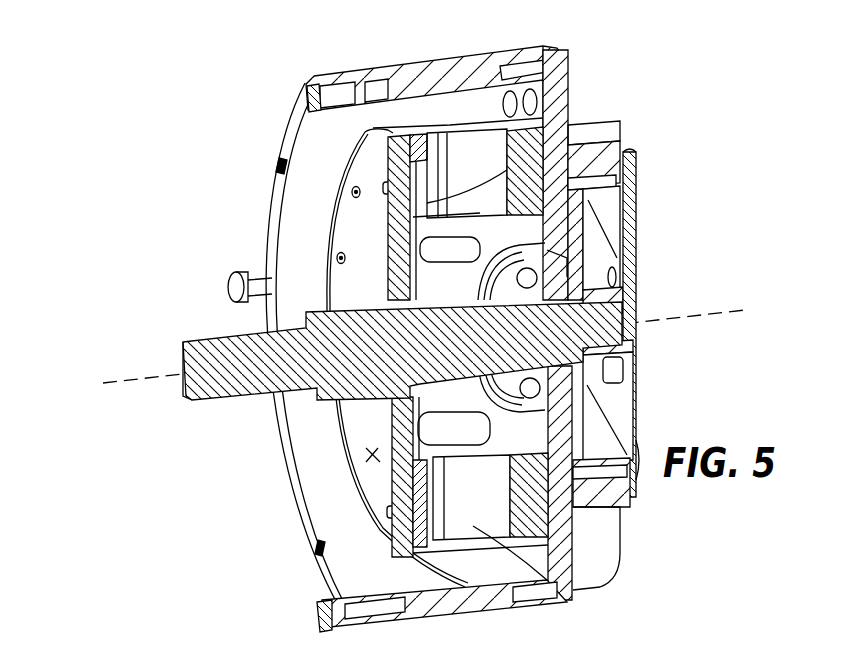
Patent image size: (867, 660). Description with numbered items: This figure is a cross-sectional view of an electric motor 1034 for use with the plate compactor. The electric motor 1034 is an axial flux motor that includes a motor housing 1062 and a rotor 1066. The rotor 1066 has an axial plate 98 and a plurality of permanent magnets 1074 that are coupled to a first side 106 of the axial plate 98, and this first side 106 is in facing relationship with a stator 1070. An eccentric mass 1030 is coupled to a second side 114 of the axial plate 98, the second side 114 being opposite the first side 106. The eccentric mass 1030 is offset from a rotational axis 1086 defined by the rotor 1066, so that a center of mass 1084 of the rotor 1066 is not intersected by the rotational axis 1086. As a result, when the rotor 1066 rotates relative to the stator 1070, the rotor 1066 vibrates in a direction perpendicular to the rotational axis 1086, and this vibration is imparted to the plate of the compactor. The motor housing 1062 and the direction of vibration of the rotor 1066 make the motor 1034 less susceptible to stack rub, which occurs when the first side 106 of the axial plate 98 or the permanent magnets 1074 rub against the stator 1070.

The electric motor 1034 is at (376, 66).
The second side 114 is at (302, 72).
The permanent magnets 1074 is at (414, 157).
The motor housing 1062 is at (520, 62).
The first side 106 is at (576, 122).
The rotor 1066 is at (302, 358).
The axial plate 98 is at (363, 167).
The rotational axis 1086 is at (126, 380).
The center of mass 1084 is at (373, 453).
The eccentric mass 1030 is at (382, 523).
The stator 1070 is at (566, 602).